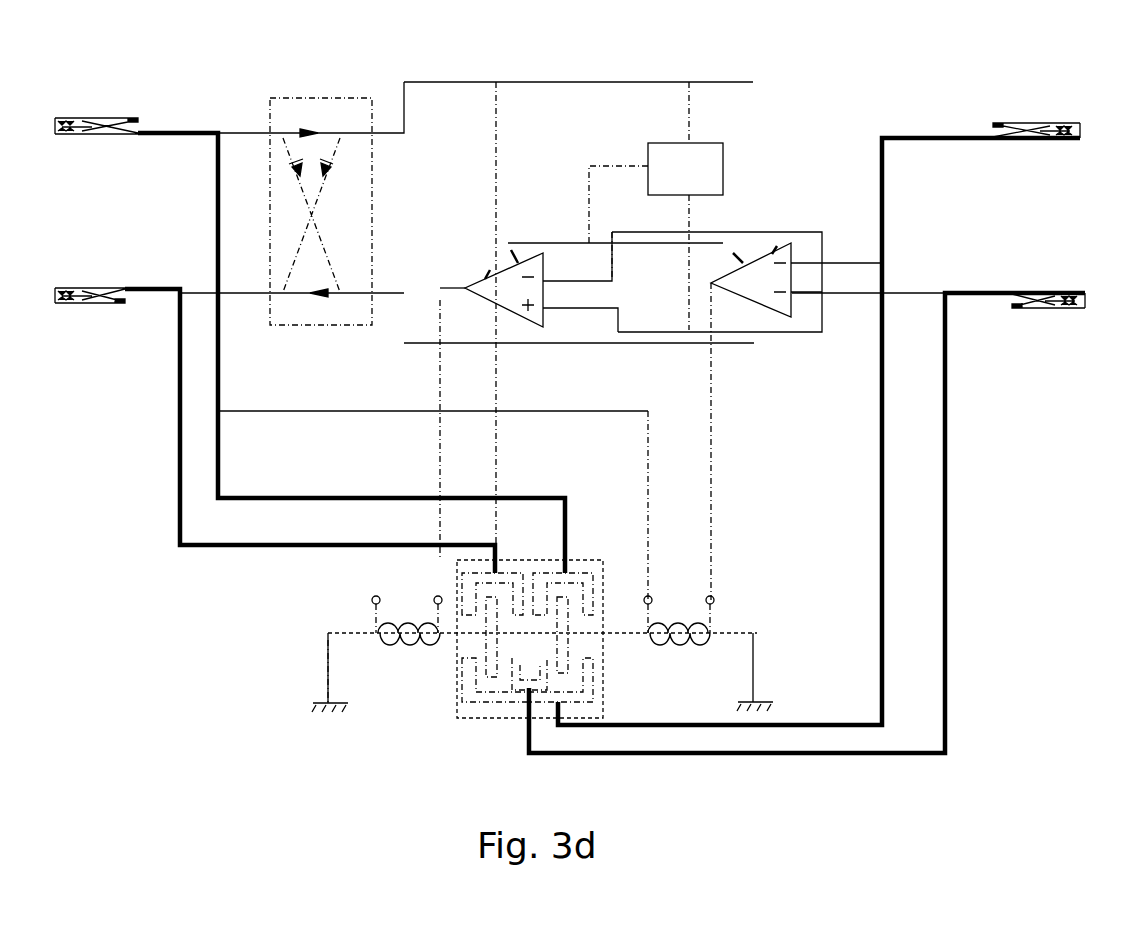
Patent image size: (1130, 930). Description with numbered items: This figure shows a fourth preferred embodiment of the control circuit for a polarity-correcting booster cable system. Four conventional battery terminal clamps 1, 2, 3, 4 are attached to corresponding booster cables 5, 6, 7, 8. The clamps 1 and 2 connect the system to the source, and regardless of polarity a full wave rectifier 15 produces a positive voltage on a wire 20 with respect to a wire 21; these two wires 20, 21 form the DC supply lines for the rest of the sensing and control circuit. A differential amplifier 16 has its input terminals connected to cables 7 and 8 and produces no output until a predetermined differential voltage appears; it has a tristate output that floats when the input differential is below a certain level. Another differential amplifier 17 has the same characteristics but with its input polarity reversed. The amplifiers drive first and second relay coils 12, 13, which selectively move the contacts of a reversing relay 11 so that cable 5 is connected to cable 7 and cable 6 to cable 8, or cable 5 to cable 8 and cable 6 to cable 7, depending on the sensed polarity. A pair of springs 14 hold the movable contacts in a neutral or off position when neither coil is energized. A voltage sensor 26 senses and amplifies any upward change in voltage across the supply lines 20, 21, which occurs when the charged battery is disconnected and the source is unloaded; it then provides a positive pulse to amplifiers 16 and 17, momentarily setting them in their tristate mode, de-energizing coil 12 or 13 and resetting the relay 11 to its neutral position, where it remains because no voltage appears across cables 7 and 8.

The battery terminal clamp 1 is at (70, 117).
The battery terminal clamp 2 is at (70, 287).
The battery terminal clamp 3 is at (1040, 106).
The battery terminal clamp 4 is at (1050, 272).
The booster cable 5 is at (172, 130).
The booster cable 6 is at (146, 283).
The booster cable 7 is at (920, 115).
The booster cable 8 is at (973, 285).
The reversing relay 11 is at (472, 713).
The first relay coil 12 is at (397, 657).
The second relay coil 13 is at (680, 653).
The spring 14 is at (327, 653).
The full wave rectifier 15 is at (340, 102).
The differential amplifier 16 is at (793, 227).
The differential amplifier 17 is at (480, 259).
The wire 20 is at (587, 82).
The wire 21 is at (655, 348).
The voltage sensor 26 is at (697, 142).